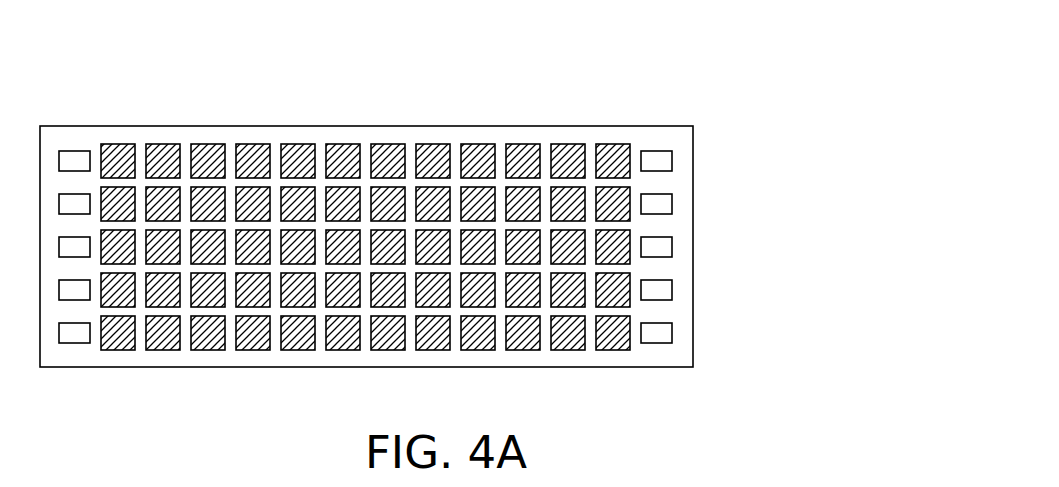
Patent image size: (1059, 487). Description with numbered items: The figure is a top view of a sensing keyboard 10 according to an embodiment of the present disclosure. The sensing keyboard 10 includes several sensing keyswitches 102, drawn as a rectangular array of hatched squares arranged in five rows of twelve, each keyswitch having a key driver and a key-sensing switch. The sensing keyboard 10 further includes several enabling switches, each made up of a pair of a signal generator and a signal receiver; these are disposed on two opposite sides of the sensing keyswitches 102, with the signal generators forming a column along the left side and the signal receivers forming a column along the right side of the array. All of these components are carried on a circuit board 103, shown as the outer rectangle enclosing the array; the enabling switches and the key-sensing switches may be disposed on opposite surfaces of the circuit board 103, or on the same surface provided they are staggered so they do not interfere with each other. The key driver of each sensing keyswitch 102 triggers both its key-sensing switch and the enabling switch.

The sensing keyboard 10 is at (830, 25).
The sensing keyswitches 102 is at (629, 112).
The circuit board 103 is at (693, 153).